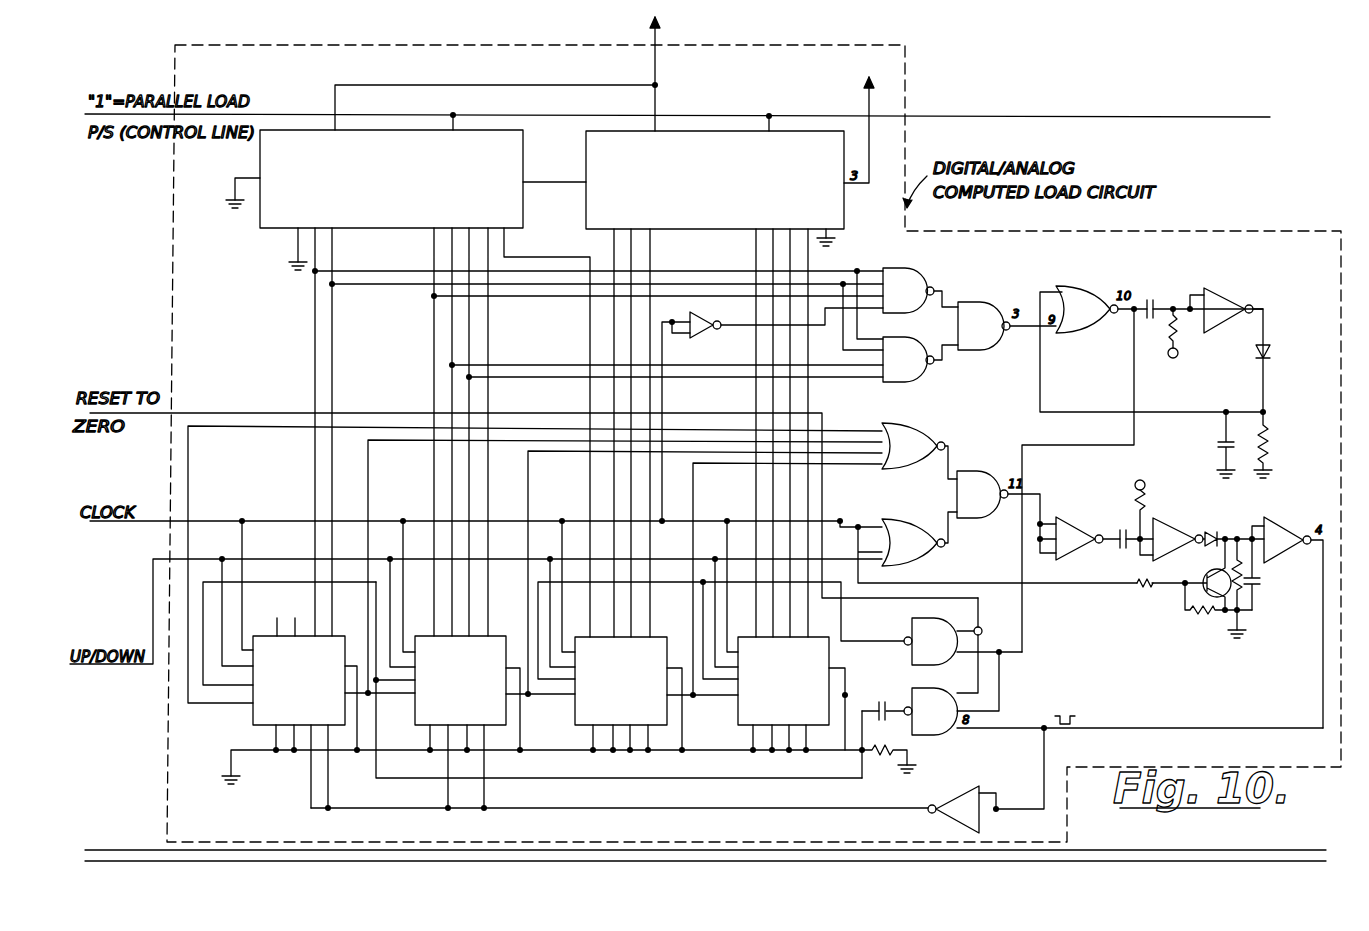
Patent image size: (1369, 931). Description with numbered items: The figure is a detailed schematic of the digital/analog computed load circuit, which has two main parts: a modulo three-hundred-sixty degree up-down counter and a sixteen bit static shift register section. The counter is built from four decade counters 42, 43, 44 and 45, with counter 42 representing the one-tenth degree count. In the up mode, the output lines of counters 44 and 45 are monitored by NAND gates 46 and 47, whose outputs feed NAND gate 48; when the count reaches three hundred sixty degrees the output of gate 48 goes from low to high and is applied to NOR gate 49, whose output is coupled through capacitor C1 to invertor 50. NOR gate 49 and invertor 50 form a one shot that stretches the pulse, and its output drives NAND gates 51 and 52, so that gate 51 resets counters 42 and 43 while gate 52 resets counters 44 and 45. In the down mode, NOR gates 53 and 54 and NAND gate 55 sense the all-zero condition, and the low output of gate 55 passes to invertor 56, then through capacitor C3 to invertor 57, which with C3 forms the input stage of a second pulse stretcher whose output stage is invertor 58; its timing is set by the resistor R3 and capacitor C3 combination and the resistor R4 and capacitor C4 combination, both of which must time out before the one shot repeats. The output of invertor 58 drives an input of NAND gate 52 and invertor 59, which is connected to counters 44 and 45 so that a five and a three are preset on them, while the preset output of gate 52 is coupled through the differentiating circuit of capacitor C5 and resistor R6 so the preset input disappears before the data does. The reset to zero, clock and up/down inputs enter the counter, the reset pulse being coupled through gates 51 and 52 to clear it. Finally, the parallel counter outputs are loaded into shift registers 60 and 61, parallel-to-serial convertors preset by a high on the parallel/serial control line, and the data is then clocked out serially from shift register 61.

The counter 42 is at (794, 692).
The counter 43 is at (631, 692).
The counter 44 is at (470, 692).
The counter 45 is at (309, 692).
The NAND gate 46 is at (910, 300).
The NAND gate 47 is at (910, 369).
The NAND gate 48 is at (984, 335).
The NOR gate 49 is at (1090, 317).
The invertor 50 is at (1228, 318).
The NAND gate 51 is at (936, 650).
The NAND gate 52 is at (936, 720).
The NOR gate 53 is at (915, 455).
The NOR gate 54 is at (915, 552).
The NAND gate 55 is at (983, 503).
The invertor 56 is at (1092, 527).
The invertor 57 is at (1170, 552).
The invertor 58 is at (1282, 526).
The invertor 59 is at (947, 798).
The shift register 60 is at (393, 189).
The shift register 61 is at (686, 188).
The capacitor C1 is at (1150, 300).
The capacitor C3 is at (1122, 548).
The capacitor C4 is at (1254, 586).
The capacitor C5 is at (886, 702).
The resistor R3 is at (1144, 506).
The resistor R4 is at (1244, 572).
The resistor R6 is at (882, 758).